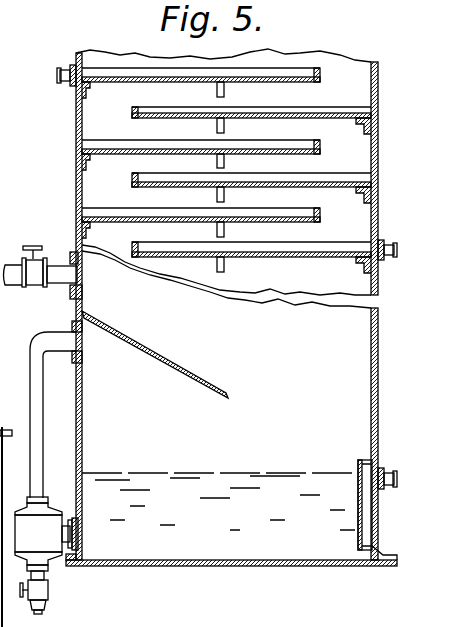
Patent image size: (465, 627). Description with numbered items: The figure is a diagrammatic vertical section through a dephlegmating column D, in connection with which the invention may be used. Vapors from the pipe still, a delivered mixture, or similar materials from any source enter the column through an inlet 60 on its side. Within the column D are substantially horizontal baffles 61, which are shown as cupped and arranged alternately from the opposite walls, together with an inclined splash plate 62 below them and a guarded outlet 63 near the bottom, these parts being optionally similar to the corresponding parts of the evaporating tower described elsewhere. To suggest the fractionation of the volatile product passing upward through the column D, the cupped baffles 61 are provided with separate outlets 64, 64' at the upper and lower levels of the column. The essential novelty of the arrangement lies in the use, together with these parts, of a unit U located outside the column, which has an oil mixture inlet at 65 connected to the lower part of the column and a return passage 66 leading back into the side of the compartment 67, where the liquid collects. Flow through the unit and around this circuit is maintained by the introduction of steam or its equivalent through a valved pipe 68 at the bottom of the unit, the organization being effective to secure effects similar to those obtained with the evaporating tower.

The dephlegmating column D is at (76, 188).
The inlet 60 is at (55, 268).
The baffles 61 is at (270, 258).
The splash plate 62 is at (172, 362).
The guarded outlet 63 is at (372, 461).
The outlet 64 is at (47, 76).
The outlet 64' is at (368, 238).
The oil mixture inlet 65 is at (72, 517).
The return passage 66 is at (38, 387).
The compartment 67 is at (246, 479).
The valved pipe 68 is at (44, 574).